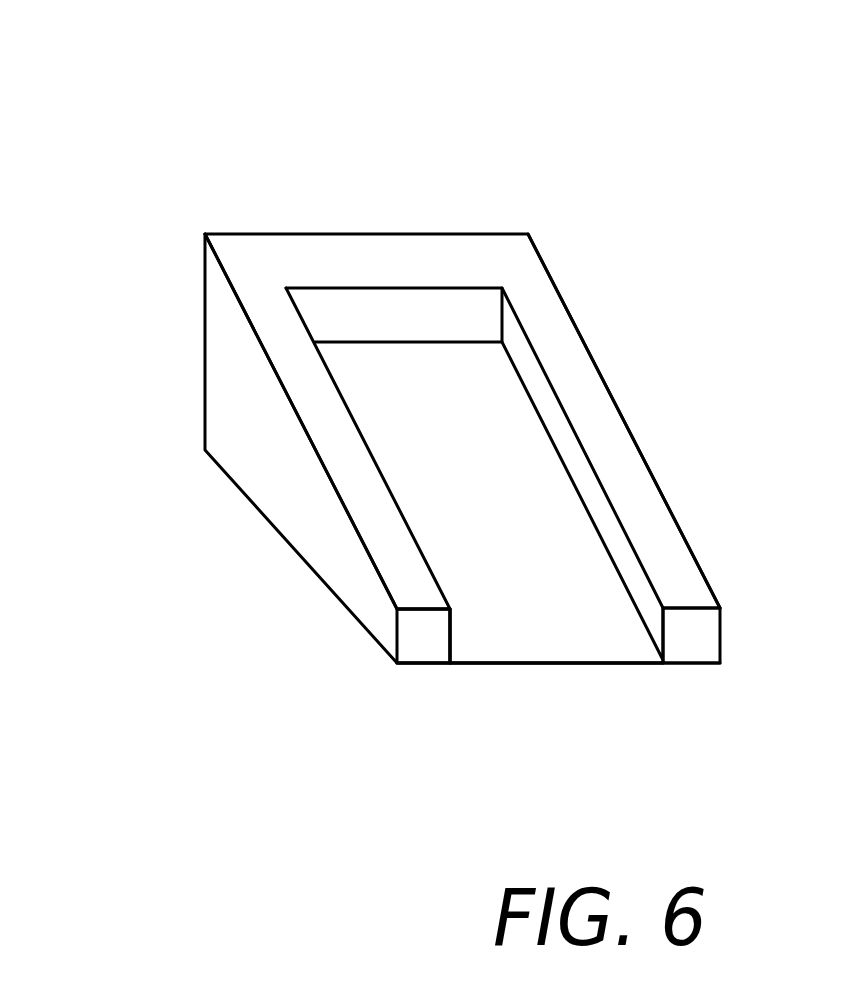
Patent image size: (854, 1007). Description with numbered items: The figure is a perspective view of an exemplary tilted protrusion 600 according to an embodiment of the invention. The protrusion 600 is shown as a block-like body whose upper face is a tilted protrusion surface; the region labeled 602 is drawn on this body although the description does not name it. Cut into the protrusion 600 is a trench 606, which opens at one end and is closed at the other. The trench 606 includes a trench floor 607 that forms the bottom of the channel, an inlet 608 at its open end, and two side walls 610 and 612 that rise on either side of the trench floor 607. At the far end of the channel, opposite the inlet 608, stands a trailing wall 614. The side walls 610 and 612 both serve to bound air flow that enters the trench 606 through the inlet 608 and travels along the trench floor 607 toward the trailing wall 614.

The protrusion 600 is at (414, 412).
The top surface 602 is at (568, 295).
The trench 606 is at (475, 645).
The trench floor 607 is at (492, 483).
The inlet 608 is at (558, 692).
The side wall 610 is at (590, 458).
The side wall 612 is at (367, 450).
The trailing wall 614 is at (383, 288).